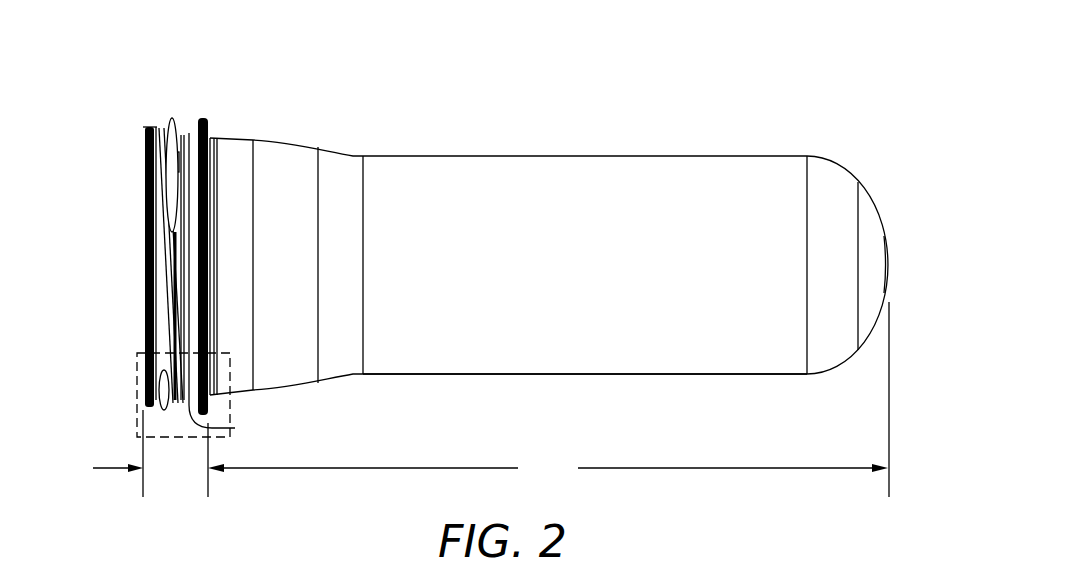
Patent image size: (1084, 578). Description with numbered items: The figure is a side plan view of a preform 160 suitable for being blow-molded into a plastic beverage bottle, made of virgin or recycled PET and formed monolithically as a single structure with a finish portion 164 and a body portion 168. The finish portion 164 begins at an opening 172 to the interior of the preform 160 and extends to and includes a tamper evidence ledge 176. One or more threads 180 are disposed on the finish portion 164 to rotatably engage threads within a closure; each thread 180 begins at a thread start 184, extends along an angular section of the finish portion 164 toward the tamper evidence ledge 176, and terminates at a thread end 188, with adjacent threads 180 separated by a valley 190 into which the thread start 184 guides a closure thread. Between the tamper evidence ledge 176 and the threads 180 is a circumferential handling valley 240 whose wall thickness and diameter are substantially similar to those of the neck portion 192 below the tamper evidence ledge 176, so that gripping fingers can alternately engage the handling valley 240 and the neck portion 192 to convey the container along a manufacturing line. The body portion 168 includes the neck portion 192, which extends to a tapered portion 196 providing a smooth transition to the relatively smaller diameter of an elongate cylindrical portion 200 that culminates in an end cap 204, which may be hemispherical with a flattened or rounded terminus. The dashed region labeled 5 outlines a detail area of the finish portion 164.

The preform 160 is at (518, 108).
The opening 172 is at (169, 241).
The tamper evidence ledge 176 is at (201, 118).
The threads 180 is at (170, 120).
The thread start 184 is at (145, 127).
The thread end 188 is at (177, 152).
The valley 190 is at (168, 148).
The neck portion 192 is at (220, 137).
The tapered portion 196 is at (300, 383).
The cylindrical portion 200 is at (658, 374).
The end cap 204 is at (888, 262).
The handling valley 240 is at (188, 133).
The finish portion 164 is at (305, 453).
The body portion 168 is at (708, 399).
The detail view region 5 is at (124, 442).